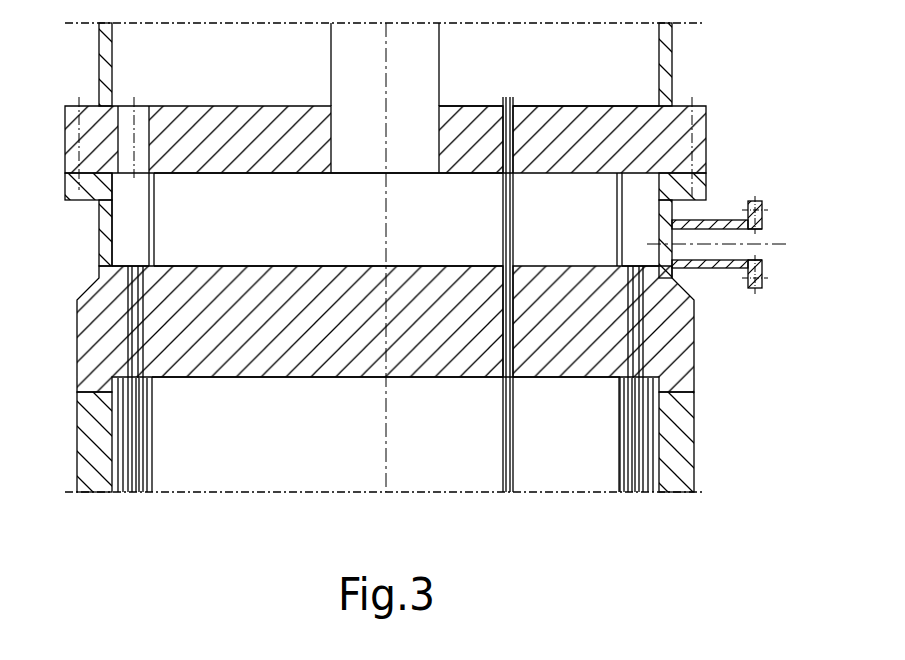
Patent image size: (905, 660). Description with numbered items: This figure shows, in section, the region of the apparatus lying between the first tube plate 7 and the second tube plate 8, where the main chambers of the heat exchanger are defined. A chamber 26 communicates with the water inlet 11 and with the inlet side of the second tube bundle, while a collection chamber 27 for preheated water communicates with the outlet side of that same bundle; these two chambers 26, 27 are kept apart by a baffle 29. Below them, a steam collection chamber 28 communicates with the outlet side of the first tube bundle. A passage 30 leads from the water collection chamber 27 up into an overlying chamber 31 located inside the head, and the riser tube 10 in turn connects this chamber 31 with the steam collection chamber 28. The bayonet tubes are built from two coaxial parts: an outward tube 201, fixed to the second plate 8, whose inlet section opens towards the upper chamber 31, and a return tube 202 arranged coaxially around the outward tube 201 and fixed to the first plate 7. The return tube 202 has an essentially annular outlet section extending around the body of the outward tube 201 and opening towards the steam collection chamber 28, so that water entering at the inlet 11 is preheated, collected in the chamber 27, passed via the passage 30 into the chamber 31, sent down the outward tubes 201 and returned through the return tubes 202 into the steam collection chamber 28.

The first tube plate 7 is at (682, 331).
The second tube plate 8 is at (695, 143).
The riser tube 10 is at (440, 37).
The water inlet 11 is at (763, 272).
The chamber 26 is at (637, 218).
The collection chamber 27 is at (125, 240).
The steam collection chamber 28 is at (290, 198).
The baffle 29 is at (153, 215).
The passage 30 is at (140, 128).
The chamber 31 is at (572, 93).
The outward tube 201 is at (503, 213).
The return tube 202 is at (500, 438).